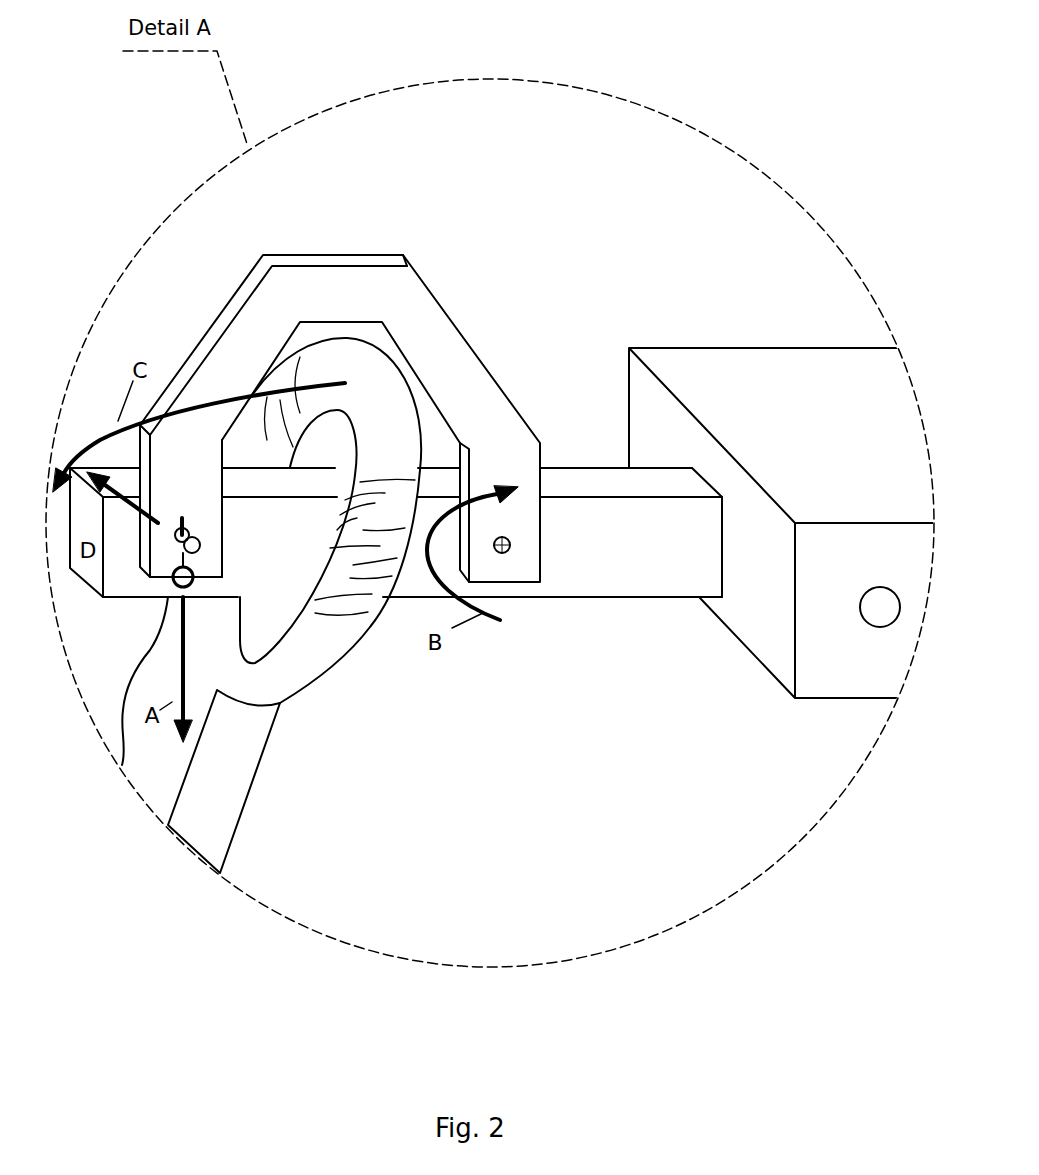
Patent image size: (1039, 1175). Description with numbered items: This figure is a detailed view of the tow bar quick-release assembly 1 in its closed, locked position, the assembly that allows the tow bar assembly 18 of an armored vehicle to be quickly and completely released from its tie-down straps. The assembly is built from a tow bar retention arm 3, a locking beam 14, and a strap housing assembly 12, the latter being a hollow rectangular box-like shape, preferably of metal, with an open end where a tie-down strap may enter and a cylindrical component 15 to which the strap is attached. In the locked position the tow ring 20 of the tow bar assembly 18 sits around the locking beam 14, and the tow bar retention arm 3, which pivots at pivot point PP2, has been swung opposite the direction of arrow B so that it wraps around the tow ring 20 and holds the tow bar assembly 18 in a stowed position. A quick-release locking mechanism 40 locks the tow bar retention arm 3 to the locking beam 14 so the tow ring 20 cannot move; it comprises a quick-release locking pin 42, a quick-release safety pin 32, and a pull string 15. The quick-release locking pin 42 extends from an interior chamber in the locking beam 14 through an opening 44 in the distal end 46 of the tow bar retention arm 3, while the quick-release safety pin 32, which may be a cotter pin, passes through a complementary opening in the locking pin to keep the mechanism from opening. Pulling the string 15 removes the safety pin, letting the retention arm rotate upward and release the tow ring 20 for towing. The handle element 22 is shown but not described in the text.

The tow bar quick-release assembly 1 is at (570, 219).
The tow bar retention arm 3 is at (435, 340).
The strap housing assembly 12 is at (791, 450).
The locking beam 14 is at (602, 553).
The pull string 15 is at (158, 620).
The tow bar assembly 18 is at (330, 812).
The tow ring 20 is at (338, 653).
The handle 22 is at (230, 777).
The quick-release safety pin 32 is at (173, 575).
The quick-release locking mechanism 40 is at (254, 533).
The quick-release locking pin 42 is at (200, 548).
The opening 44 is at (177, 532).
The distal end 46 is at (210, 568).
The pivot point PP2 is at (510, 545).